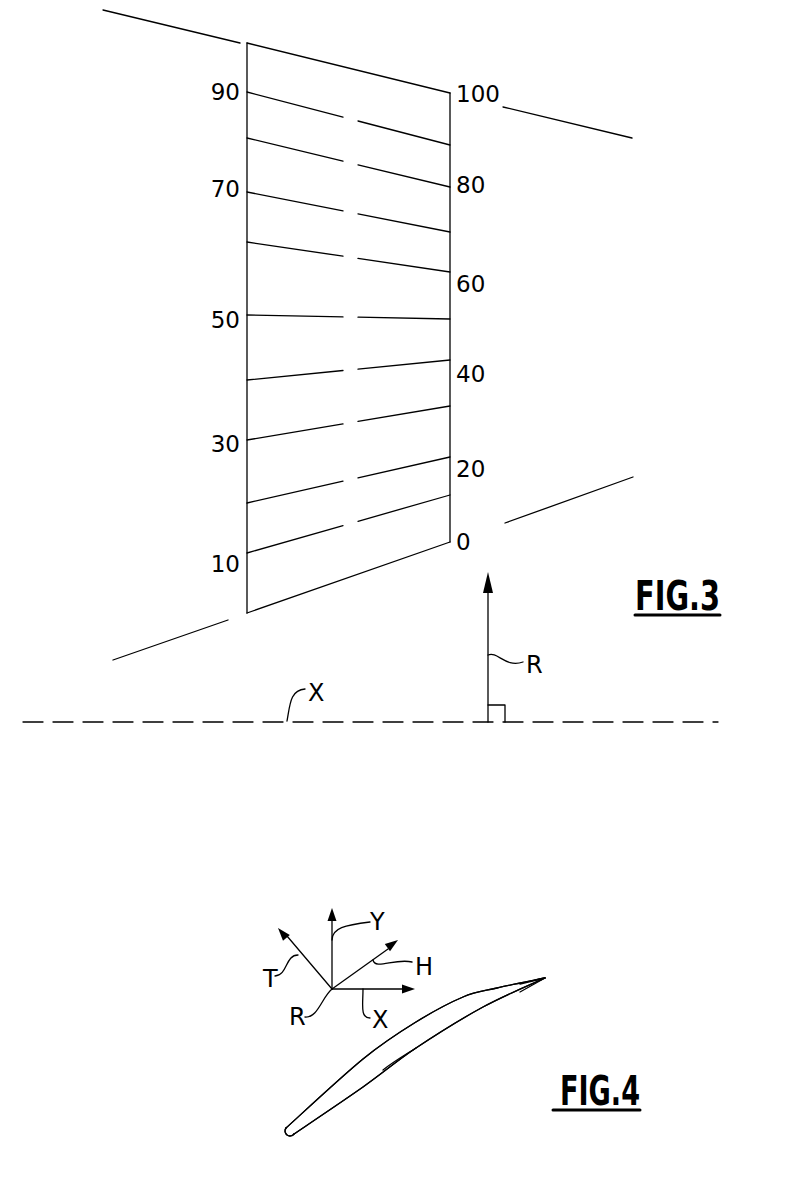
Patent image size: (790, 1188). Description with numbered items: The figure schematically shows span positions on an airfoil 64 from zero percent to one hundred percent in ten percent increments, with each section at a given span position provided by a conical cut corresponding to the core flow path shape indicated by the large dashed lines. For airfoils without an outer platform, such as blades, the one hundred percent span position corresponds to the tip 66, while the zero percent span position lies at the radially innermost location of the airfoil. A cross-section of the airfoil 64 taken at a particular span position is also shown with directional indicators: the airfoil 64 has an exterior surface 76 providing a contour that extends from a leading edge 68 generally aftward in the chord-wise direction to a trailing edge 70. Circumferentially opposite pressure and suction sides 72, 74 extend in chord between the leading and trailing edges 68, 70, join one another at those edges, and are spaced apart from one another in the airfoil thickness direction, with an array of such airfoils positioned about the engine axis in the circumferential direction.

In FIG. 3, the airfoil 64 is at (476, 233).
In FIG. 4, the airfoil 64 is at (478, 972).
In FIG. 3, the tip 66 is at (345, 68).
In FIG. 3, the leading edge 68 is at (245, 259).
In FIG. 4, the leading edge 68 is at (287, 1132).
In FIG. 3, the trailing edge 70 is at (450, 305).
In FIG. 4, the trailing edge 70 is at (545, 978).
In FIG. 4, the pressure side 72 is at (365, 1087).
In FIG. 4, the suction side 74 is at (363, 1059).
In FIG. 4, the exterior surface 76 is at (405, 1072).